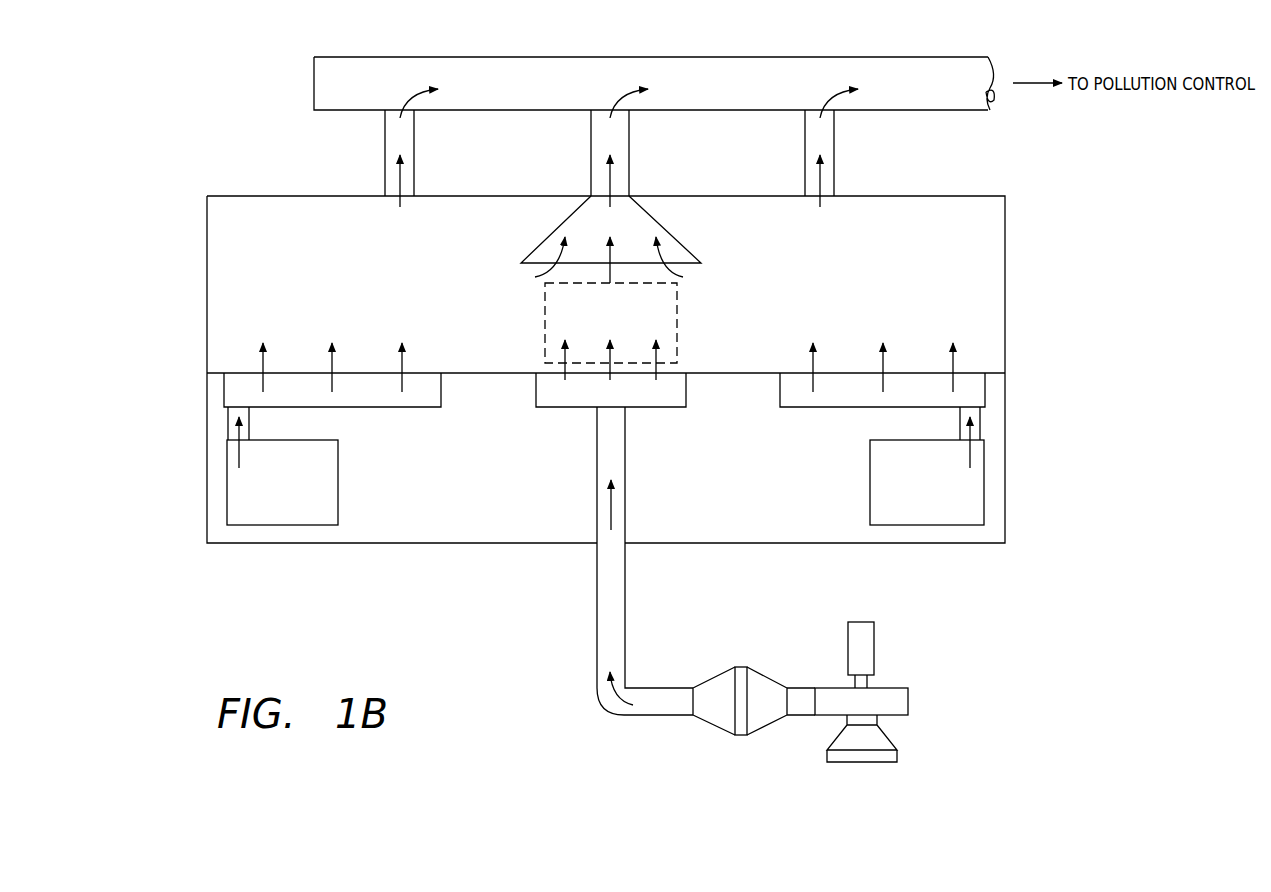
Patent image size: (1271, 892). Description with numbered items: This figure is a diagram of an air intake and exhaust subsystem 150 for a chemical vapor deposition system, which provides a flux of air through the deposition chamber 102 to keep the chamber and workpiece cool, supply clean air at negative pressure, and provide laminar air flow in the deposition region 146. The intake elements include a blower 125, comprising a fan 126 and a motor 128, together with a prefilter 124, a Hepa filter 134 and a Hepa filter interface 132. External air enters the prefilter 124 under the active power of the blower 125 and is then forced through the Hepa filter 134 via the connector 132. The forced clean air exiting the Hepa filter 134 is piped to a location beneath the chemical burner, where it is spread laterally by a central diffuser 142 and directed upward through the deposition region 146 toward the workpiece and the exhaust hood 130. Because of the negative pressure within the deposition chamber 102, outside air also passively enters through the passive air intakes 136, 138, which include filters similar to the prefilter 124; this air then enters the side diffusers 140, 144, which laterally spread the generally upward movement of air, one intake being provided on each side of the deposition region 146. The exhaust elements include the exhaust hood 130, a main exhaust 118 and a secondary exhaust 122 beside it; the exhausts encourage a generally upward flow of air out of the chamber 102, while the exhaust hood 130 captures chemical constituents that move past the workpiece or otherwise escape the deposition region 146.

The deposition chamber 102 is at (1005, 246).
The main exhaust 118 is at (629, 150).
The secondary exhaust 122 is at (414, 150).
The prefilter 124 is at (850, 763).
The blower 125 is at (888, 442).
The fan 126 is at (893, 688).
The motor 128 is at (834, 150).
The exhaust hood 130 is at (674, 237).
The Hepa filter interface 132 is at (741, 692).
The Hepa filter 134 is at (737, 740).
The passive air intake 136 is at (338, 490).
The passive air intake 138 is at (870, 497).
The air diffuser 140 is at (385, 407).
The central diffuser 142 is at (647, 407).
The air diffuser 144 is at (823, 407).
The deposition region 146 is at (677, 322).
The intake and exhaust subsystem 150 is at (410, 585).